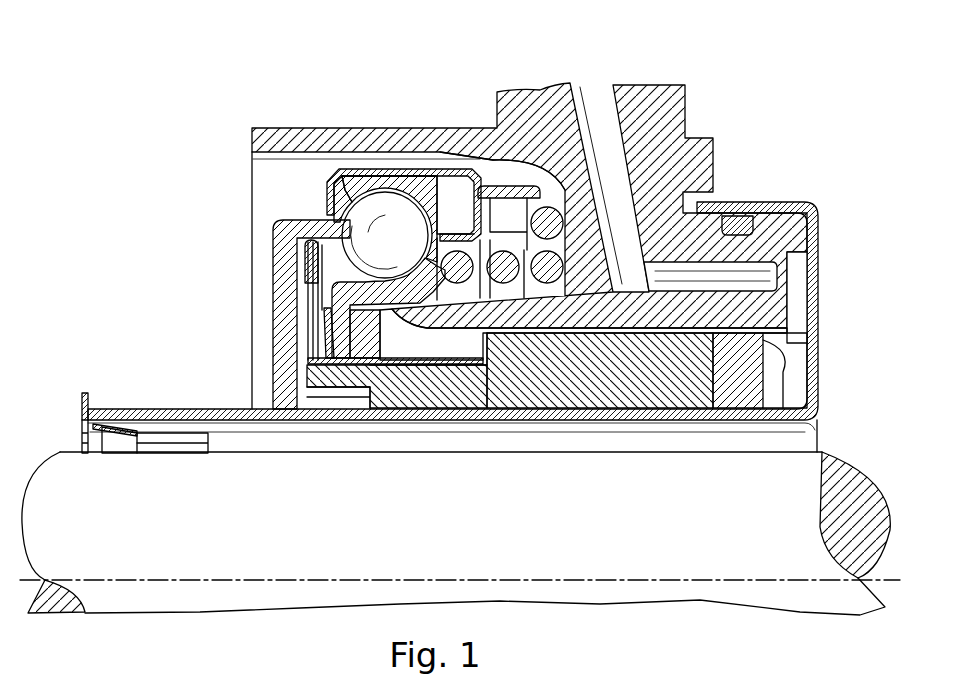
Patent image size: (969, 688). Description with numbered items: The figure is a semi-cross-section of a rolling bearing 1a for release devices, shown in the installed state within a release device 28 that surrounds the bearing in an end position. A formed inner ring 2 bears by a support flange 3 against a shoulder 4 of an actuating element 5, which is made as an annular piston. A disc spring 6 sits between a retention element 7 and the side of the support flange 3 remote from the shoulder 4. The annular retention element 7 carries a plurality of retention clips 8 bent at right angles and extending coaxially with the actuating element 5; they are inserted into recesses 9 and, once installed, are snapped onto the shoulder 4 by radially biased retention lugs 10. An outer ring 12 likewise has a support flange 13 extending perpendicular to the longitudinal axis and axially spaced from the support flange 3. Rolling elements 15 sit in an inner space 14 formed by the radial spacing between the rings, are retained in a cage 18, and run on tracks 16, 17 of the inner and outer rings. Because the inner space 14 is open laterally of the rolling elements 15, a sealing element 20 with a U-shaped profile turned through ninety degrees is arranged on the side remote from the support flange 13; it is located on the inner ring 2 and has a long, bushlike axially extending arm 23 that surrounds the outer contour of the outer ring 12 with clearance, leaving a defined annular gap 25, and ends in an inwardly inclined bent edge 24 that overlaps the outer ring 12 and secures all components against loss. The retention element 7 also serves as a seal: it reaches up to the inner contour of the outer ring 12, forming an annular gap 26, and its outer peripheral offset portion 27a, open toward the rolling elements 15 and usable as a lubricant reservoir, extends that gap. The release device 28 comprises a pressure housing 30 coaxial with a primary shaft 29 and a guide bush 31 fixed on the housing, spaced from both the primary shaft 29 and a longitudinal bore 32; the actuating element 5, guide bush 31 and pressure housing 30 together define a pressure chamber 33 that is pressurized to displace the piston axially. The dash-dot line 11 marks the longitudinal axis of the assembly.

The rolling bearing 1a is at (221, 258).
The inner ring 2 is at (525, 183).
The support flange 3 is at (341, 380).
The shoulder 4 is at (390, 346).
The actuating element 5 is at (562, 394).
The disc spring 6 is at (317, 343).
The retention element 7 is at (317, 313).
The retention clips 8 is at (462, 352).
The recesses 9 is at (493, 367).
The retention lugs 10 is at (397, 356).
The axis 11 is at (626, 583).
The outer ring 12 is at (303, 233).
The support flange 13 is at (280, 333).
The inner space 14 is at (451, 190).
The rolling elements 15 is at (383, 252).
The track 16 is at (412, 268).
The track 17 is at (389, 198).
The cage 18 is at (340, 228).
The sealing element 20 is at (478, 167).
The axially extending arm 23 is at (354, 172).
The bent edge 24 is at (338, 172).
The annular gap 25 is at (424, 174).
The annular gap 26 is at (283, 220).
The offset portion 27a is at (305, 260).
The release device 28 is at (632, 83).
The primary shaft 29 is at (263, 541).
The pressure housing 30 is at (688, 100).
The guide bush 31 is at (770, 203).
The longitudinal bore 32 is at (790, 338).
The pressure chamber 33 is at (783, 396).